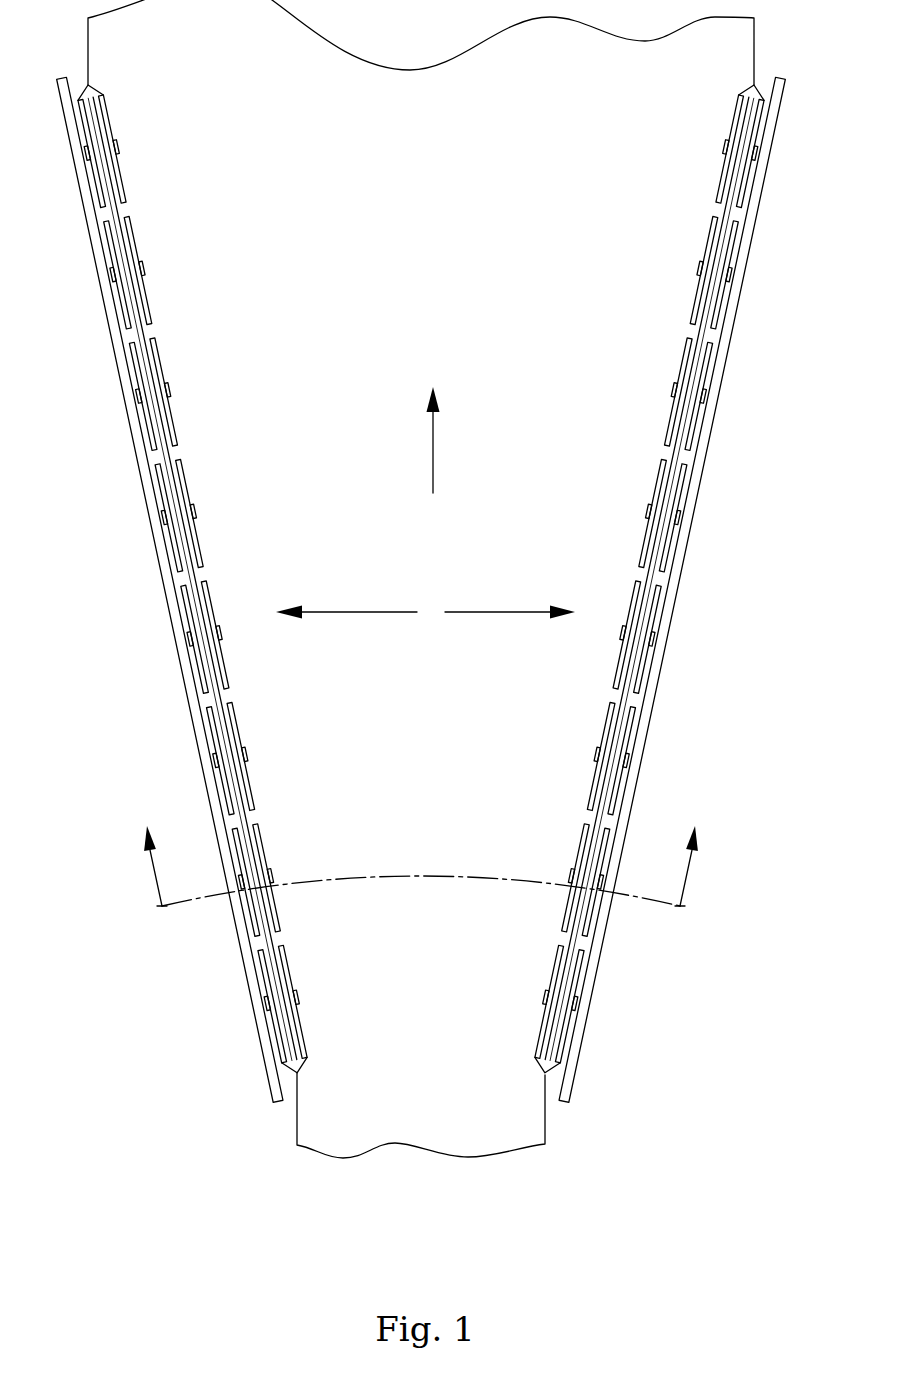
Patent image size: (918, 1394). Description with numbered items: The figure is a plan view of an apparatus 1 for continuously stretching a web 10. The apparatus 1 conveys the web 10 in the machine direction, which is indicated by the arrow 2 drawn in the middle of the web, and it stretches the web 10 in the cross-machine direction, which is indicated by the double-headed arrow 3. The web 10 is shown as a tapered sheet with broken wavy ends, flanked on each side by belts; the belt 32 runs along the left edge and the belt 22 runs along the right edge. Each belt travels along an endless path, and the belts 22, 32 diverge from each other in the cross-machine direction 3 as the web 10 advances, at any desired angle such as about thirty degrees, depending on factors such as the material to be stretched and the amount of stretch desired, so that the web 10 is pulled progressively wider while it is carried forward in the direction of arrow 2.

The apparatus 1 is at (443, 586).
The web 10 is at (408, 320).
The belt 22 is at (728, 458).
The belt 32 is at (170, 589).
The arrow 2 is at (434, 456).
The arrow 3 is at (421, 754).